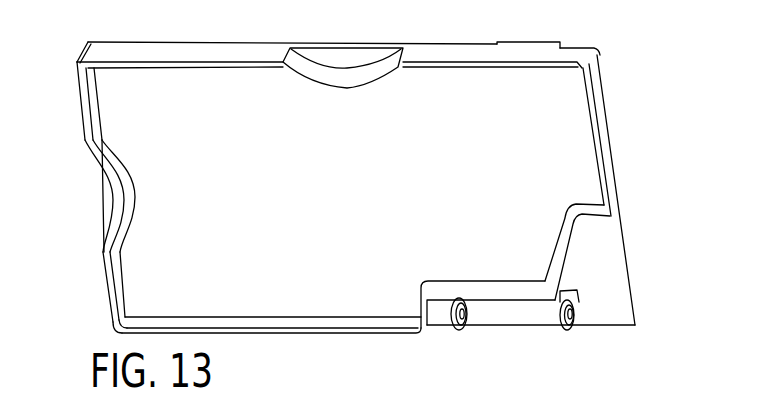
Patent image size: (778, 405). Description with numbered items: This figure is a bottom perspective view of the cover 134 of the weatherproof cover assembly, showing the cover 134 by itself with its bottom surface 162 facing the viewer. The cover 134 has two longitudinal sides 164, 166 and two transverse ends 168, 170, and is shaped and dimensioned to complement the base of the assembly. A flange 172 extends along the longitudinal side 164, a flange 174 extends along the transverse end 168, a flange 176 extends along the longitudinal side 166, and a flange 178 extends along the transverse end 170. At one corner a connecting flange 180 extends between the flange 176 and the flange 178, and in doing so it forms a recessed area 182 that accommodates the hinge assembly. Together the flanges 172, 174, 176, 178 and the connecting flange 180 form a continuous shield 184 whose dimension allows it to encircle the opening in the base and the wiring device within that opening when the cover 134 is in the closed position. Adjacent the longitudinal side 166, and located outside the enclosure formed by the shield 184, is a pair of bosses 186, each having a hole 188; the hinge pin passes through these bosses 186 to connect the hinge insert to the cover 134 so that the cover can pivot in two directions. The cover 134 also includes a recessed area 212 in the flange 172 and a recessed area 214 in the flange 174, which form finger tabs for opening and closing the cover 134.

The cover 134 is at (630, 155).
The bottom surface 162 is at (167, 280).
The longitudinal side 164 is at (496, 43).
The longitudinal side 166 is at (253, 316).
The transverse end 168 is at (125, 268).
The transverse end 170 is at (613, 122).
The flange 172 is at (262, 47).
The flange 174 is at (103, 273).
The flange 176 is at (225, 322).
The flange 178 is at (613, 180).
The connecting flange 180 is at (487, 287).
The recessed area 182 is at (596, 264).
The continuous shield 184 is at (445, 75).
The bosses 186 is at (456, 328).
The hole 188 is at (467, 313).
The recessed area 212 is at (338, 55).
The recessed area 214 is at (111, 196).